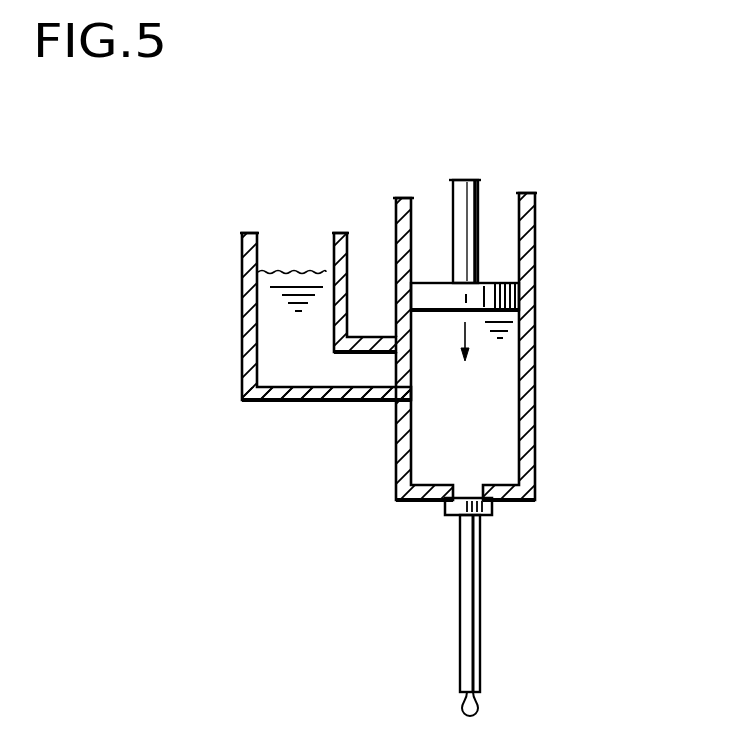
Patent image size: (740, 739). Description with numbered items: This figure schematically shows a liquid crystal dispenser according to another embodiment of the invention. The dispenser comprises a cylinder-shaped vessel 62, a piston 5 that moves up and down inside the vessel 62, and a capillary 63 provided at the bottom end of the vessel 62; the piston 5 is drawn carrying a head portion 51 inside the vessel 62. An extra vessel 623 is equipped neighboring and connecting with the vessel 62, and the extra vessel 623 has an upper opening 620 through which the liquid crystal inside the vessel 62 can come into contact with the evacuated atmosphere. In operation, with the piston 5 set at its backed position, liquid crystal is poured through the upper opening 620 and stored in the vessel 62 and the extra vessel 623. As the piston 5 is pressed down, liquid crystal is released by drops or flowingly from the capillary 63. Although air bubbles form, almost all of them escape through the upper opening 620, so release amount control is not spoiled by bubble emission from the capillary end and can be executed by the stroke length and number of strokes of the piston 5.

The piston 5 is at (478, 193).
The piston 51 is at (500, 284).
The cylinder-shaped vessel 62 is at (537, 381).
The upper opening 620 is at (295, 238).
The extra vessel 623 is at (318, 402).
The capillary 63 is at (480, 607).